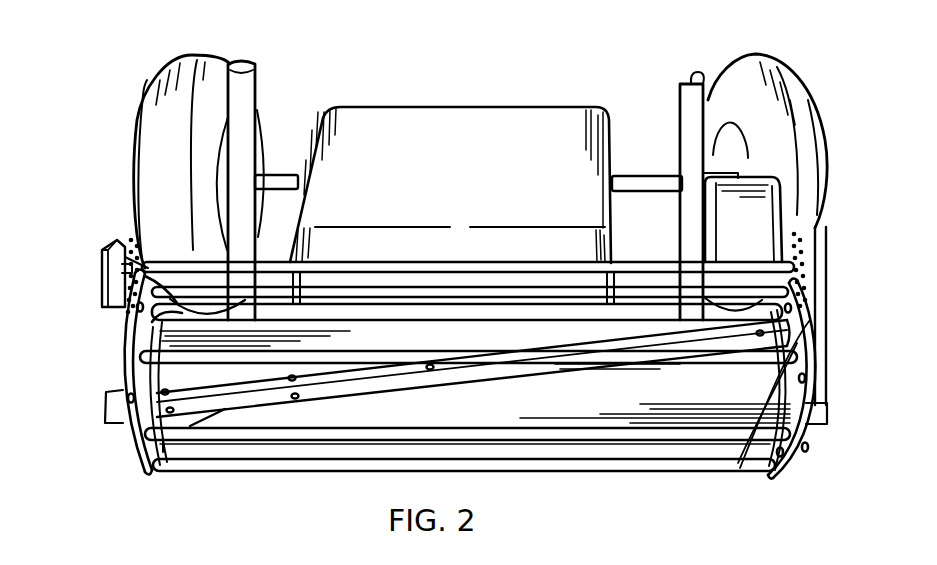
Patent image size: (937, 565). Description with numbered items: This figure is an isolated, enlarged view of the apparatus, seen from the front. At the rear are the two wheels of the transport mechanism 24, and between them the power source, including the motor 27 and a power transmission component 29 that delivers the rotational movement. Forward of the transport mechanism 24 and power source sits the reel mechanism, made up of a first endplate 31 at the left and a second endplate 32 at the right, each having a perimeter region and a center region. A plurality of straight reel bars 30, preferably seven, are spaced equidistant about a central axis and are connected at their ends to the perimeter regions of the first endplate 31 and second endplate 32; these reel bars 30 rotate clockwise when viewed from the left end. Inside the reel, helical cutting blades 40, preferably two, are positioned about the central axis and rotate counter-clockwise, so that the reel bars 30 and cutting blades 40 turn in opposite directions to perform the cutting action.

The transport mechanism 24 is at (145, 93).
The motor 27 is at (785, 214).
The power transmission component 29 is at (526, 268).
The reel bars 30 is at (138, 303).
The first endplate 31 is at (123, 352).
The second endplate 32 is at (817, 428).
The cutting blades 40 is at (140, 433).